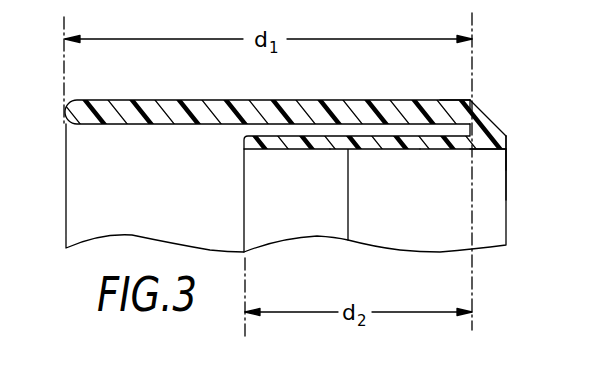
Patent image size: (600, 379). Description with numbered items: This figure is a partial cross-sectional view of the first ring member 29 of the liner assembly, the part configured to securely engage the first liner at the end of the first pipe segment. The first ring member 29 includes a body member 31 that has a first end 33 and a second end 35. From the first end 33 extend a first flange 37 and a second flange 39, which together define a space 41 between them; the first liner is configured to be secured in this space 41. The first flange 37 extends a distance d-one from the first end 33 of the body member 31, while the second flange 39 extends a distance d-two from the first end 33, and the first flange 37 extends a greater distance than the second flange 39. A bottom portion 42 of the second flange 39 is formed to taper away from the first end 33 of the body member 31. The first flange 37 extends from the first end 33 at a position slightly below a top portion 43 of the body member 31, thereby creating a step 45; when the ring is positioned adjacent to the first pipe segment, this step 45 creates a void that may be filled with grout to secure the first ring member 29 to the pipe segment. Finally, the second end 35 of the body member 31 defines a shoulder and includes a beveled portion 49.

The first ring member 29 is at (474, 64).
The body member 31 is at (507, 132).
The first end 33 is at (458, 144).
The second end 35 is at (507, 150).
The first flange 37 is at (173, 100).
The second flange 39 is at (302, 148).
The space 41 is at (327, 134).
The bottom portion 42 is at (380, 150).
The top portion 43 is at (472, 98).
The step 45 is at (470, 98).
The beveled portion 49 is at (493, 107).